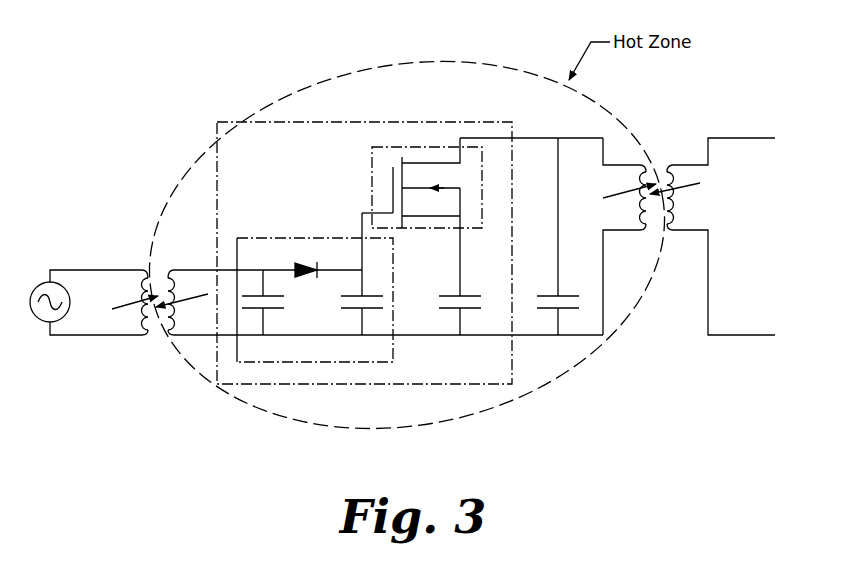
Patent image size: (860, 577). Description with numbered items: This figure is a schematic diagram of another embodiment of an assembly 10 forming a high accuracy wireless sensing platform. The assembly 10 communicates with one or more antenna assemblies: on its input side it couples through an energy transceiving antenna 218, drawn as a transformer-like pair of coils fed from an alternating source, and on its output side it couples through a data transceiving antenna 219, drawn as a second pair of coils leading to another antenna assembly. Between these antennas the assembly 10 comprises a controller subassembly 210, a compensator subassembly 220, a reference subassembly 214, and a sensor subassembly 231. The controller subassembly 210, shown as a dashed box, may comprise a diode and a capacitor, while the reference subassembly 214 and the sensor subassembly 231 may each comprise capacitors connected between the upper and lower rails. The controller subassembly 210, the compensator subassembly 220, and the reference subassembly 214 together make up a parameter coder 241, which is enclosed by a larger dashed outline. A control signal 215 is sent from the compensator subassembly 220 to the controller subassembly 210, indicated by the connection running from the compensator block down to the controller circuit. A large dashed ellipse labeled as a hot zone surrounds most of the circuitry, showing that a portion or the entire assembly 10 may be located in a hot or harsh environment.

The assembly 10 is at (208, 87).
The controller subassembly 210 is at (234, 235).
The reference subassembly 214 is at (468, 320).
The control signal 215 is at (364, 222).
The energy transceiving antenna 218 is at (146, 258).
The data transceiving antenna 219 is at (668, 157).
The compensator subassembly 220 is at (370, 160).
The sensor subassembly 231 is at (568, 322).
The parameter coder 241 is at (446, 120).